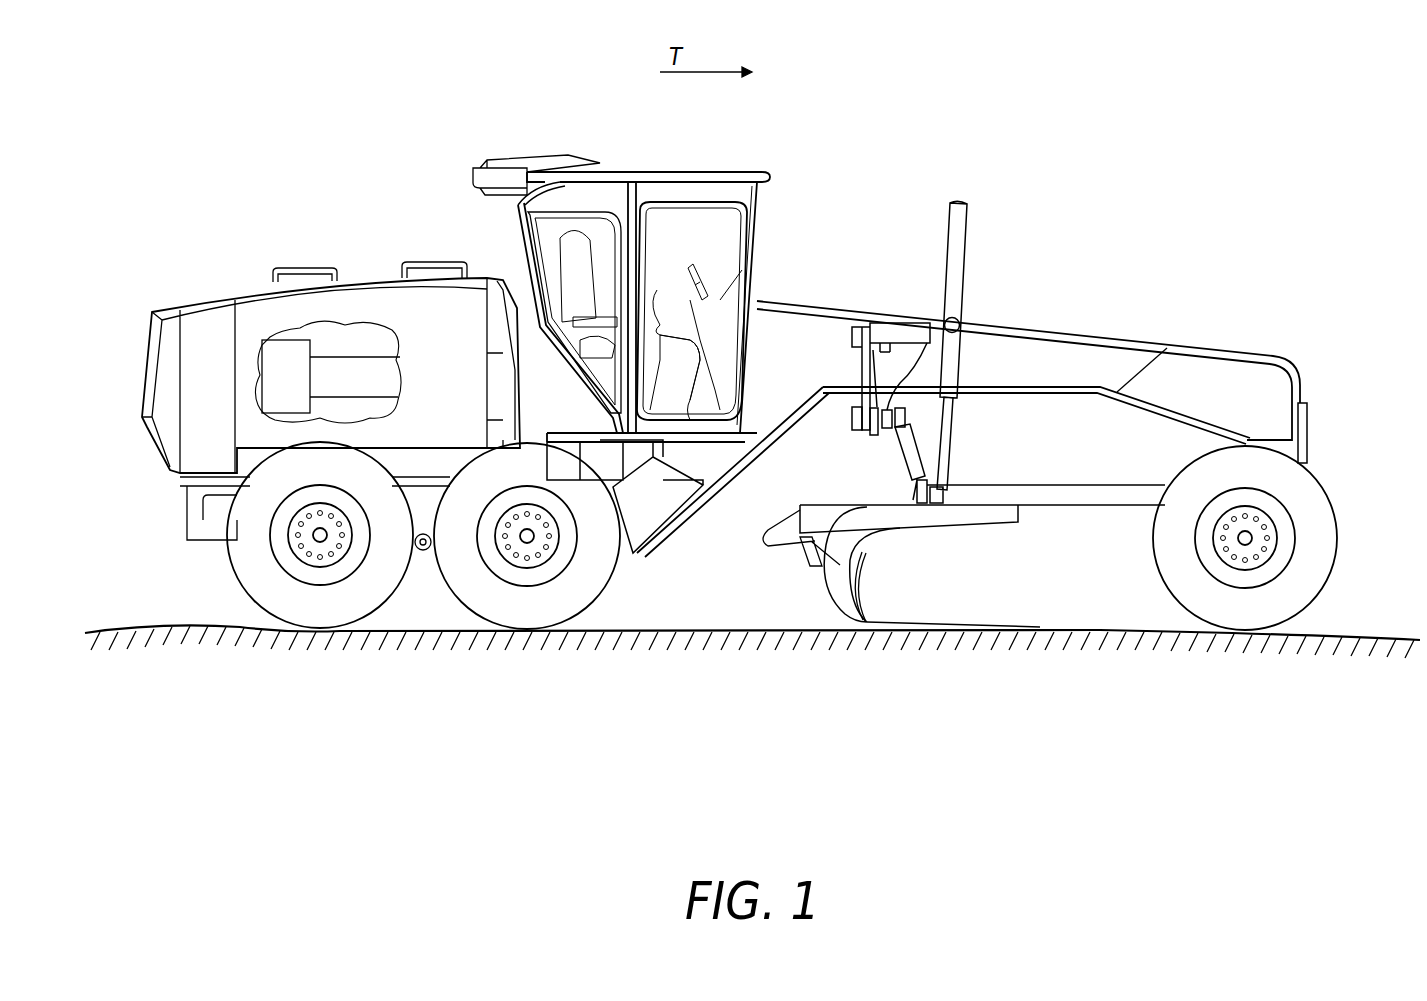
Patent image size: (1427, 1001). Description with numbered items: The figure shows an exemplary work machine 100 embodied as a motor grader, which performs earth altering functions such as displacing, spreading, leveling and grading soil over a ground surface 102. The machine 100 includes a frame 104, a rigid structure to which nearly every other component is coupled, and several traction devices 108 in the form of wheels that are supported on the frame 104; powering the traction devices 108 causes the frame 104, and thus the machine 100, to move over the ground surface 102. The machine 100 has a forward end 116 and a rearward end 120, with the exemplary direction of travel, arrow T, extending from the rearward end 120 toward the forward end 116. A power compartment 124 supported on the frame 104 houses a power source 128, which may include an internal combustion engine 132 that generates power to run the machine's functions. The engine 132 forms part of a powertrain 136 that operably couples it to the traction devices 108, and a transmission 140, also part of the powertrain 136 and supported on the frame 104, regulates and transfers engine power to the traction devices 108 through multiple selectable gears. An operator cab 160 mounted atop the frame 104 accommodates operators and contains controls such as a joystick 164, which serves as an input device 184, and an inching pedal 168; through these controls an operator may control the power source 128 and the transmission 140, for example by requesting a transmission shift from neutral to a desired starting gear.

The work machine 100 is at (1222, 150).
The ground surface 102 is at (1376, 640).
The frame 104 is at (667, 497).
The traction devices 108 is at (243, 597).
The forward end 116 is at (1322, 380).
The rearward end 120 is at (282, 372).
The power compartment 124 is at (222, 300).
The power source 128 is at (285, 320).
The engine 132 is at (283, 340).
The powertrain 136 is at (298, 424).
The transmission 140 is at (347, 357).
The operator cab 160 is at (658, 330).
The joystick 164 is at (651, 214).
The input device 184 is at (660, 282).
The inching pedal 168 is at (686, 390).